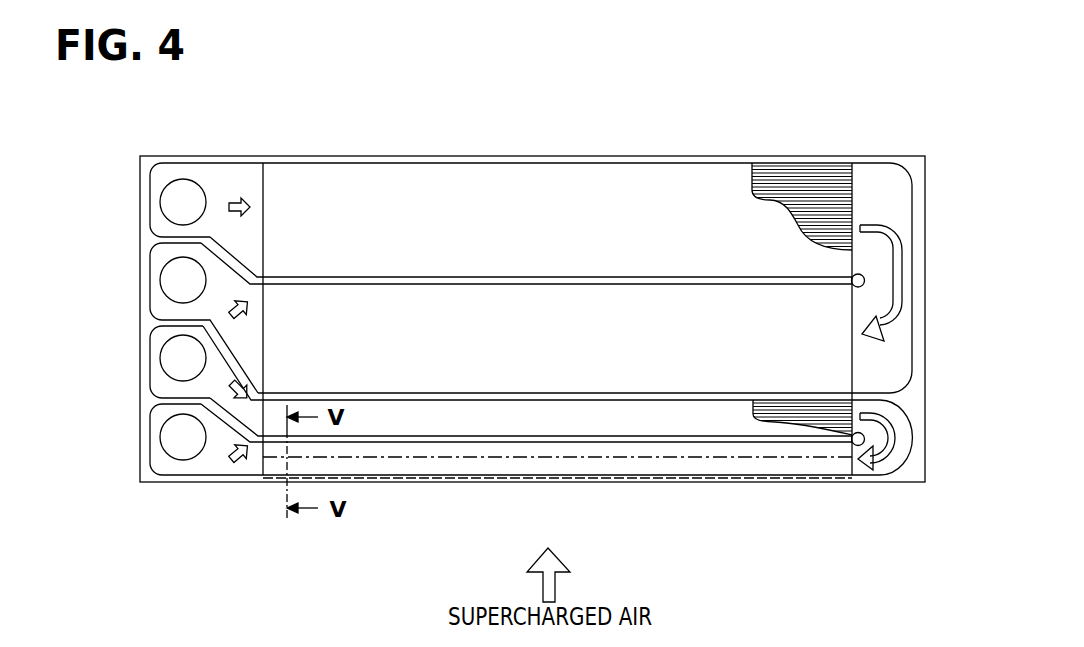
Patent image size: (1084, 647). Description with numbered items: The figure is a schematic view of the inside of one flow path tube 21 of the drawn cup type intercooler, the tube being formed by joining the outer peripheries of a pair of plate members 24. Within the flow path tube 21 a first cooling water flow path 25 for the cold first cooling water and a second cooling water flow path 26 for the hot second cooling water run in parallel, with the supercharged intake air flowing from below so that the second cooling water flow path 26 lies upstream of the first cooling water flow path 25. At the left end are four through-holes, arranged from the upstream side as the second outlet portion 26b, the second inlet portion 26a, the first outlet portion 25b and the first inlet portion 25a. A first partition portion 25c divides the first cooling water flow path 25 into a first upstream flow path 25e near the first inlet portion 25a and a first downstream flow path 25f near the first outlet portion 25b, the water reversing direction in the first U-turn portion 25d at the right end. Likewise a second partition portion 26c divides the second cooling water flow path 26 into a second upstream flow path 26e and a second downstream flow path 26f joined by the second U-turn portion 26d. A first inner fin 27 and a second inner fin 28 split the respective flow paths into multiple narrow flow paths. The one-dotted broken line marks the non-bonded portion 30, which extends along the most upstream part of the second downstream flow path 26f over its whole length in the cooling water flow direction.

The flow path tube 21 is at (318, 157).
The plate member 24 is at (663, 157).
The first cooling water flow path 25 is at (912, 208).
The first inlet portion 25a is at (181, 178).
The first outlet portion 25b is at (160, 275).
The first partition portion 25c is at (743, 273).
The first U-turn portion 25d is at (880, 195).
The first upstream flow path 25e is at (407, 200).
The first downstream flow path 25f is at (458, 330).
The second cooling water flow path 26 is at (912, 455).
The second inlet portion 26a is at (160, 355).
The second outlet portion 26b is at (183, 461).
The second partition portion 26c is at (743, 444).
The second U-turn portion 26d is at (877, 468).
The second upstream flow path 26e is at (383, 418).
The second downstream flow path 26f is at (428, 452).
The first inner fin 27 is at (810, 180).
The second inner fin 28 is at (799, 422).
The non-bonded portion 30 is at (487, 479).